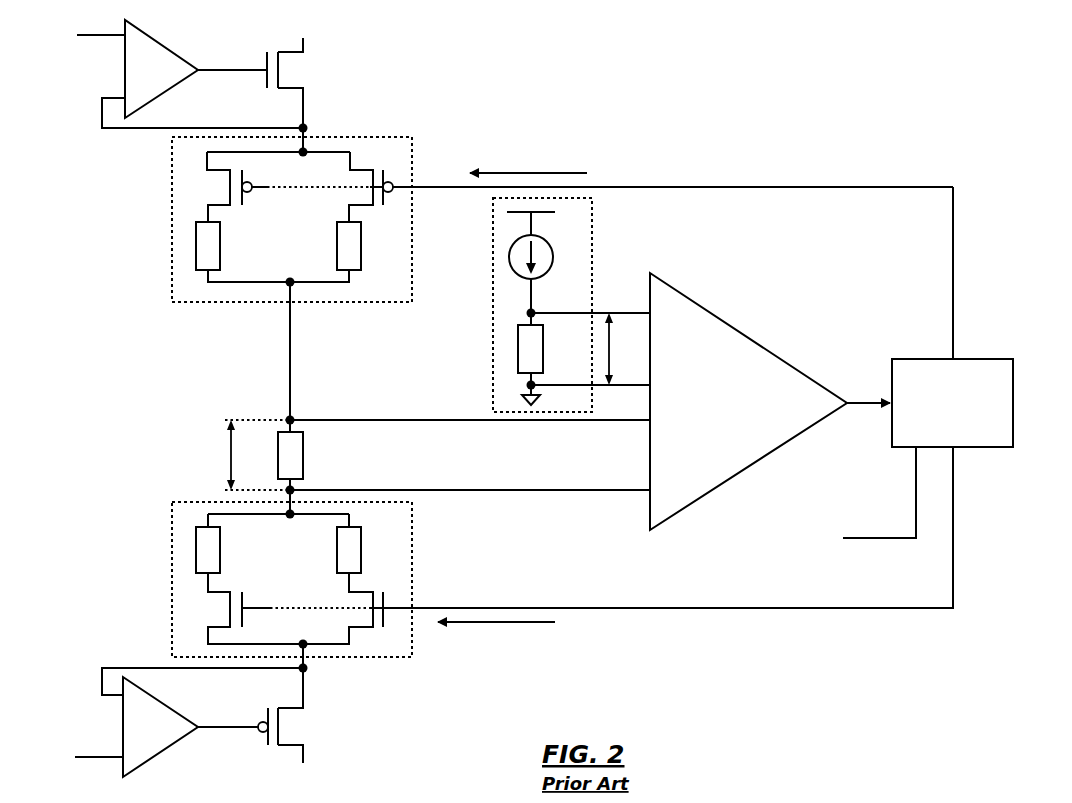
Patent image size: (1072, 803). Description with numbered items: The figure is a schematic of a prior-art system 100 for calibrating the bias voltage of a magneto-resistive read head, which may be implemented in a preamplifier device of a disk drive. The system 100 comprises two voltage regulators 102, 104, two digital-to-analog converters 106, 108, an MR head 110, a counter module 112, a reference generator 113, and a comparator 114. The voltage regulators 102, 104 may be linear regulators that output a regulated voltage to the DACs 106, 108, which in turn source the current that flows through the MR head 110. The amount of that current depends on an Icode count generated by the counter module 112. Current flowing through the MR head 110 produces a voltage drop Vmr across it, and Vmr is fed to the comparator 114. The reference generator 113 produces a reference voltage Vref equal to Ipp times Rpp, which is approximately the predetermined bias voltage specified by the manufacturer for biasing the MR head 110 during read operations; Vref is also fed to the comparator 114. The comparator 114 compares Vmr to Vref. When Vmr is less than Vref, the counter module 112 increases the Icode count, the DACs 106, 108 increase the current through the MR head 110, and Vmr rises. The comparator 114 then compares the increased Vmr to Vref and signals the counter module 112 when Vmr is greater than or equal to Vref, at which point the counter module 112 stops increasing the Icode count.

The system 100 is at (785, 124).
The voltage regulator 102 is at (167, 45).
The voltage regulator 104 is at (177, 710).
The digital-to-analog converter 106 is at (387, 136).
The digital-to-analog converter 108 is at (410, 553).
The MR head 110 is at (303, 456).
The counter module 112 is at (1015, 402).
The reference generator 113 is at (591, 250).
The comparator 114 is at (743, 333).